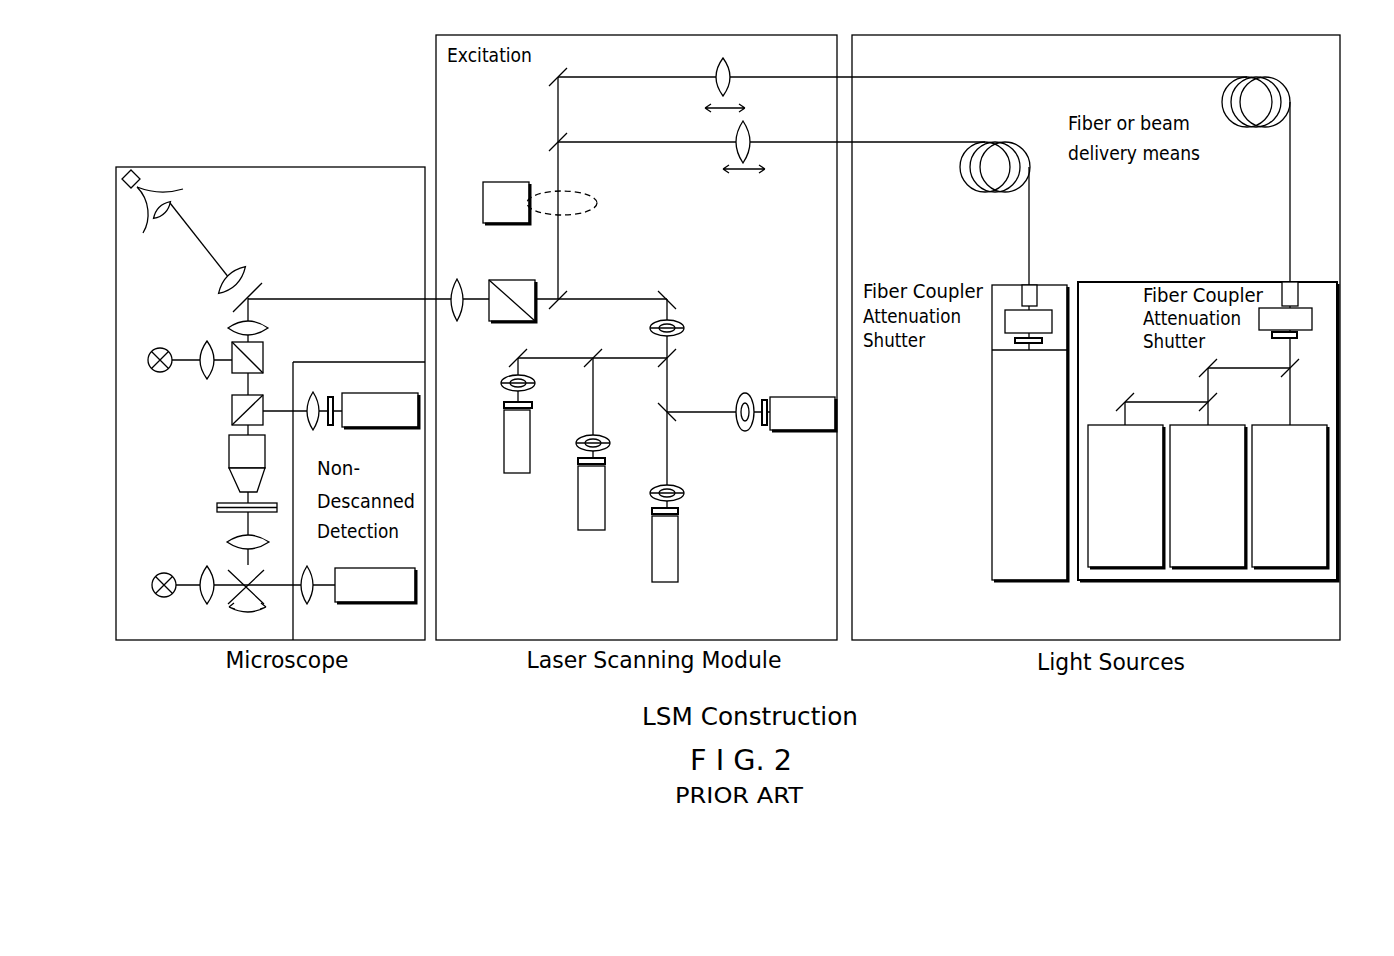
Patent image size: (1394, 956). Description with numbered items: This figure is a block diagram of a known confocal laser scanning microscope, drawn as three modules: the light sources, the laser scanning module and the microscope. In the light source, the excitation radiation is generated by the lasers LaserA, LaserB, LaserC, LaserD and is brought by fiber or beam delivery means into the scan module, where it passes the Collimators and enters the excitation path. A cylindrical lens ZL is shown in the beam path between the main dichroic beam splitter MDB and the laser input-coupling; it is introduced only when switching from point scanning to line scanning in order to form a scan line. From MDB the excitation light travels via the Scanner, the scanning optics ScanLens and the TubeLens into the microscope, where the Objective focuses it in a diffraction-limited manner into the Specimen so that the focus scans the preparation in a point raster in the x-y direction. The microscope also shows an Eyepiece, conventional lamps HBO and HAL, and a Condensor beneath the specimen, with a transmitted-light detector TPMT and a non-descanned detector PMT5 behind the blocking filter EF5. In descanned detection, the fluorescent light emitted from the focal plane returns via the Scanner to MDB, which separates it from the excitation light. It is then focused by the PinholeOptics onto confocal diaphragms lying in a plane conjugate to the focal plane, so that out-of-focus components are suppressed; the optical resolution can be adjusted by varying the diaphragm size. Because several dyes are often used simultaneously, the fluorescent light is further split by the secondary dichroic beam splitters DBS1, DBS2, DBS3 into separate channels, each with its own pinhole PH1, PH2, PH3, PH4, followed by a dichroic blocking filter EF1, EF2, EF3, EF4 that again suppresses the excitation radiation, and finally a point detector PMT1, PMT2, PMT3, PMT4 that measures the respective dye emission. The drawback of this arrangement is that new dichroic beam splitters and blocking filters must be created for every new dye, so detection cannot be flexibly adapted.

The eyepiece Eyepiece is at (272, 270).
The tube lens TubeLens is at (299, 330).
The HBO lamp HBO is at (179, 349).
The halogen lamp HAL is at (182, 596).
The objective Objective is at (195, 463).
The specimen Specimen is at (200, 505).
The condensor Condensor is at (196, 540).
The point detector PMT5 is at (363, 411).
The dichroic blocking filter EF5 is at (337, 390).
The transmission photomultiplier TPMT is at (358, 585).
The collimators Collimators is at (675, 115).
The cylindrical lens ZL is at (540, 203).
The scanner Scanner is at (514, 286).
The scanning optics ScanLens is at (461, 329).
The dichroic beam splitter MDB is at (592, 291).
The pinhole optics PinholeOptics is at (733, 325).
The secondary beam splitter DBS1 is at (692, 355).
The secondary beam splitter DBS2 is at (600, 345).
The secondary beam splitter DBS3 is at (645, 401).
The pinhole PH1 is at (688, 493).
The pinhole PH2 is at (611, 441).
The pinhole PH3 is at (537, 381).
The pinhole PH4 is at (747, 399).
The dichroic blocking filter EF1 is at (689, 518).
The dichroic blocking filter EF2 is at (612, 463).
The dichroic blocking filter EF3 is at (539, 401).
The dichroic blocking filter EF4 is at (772, 428).
The point detector PMT1 is at (636, 549).
The point detector PMT2 is at (562, 498).
The point detector PMT3 is at (490, 441).
The point detector PMT4 is at (803, 414).
The laser LaserA is at (1030, 433).
The laser LaserB is at (1126, 496).
The laser LaserC is at (1208, 496).
The laser LaserD is at (1290, 496).